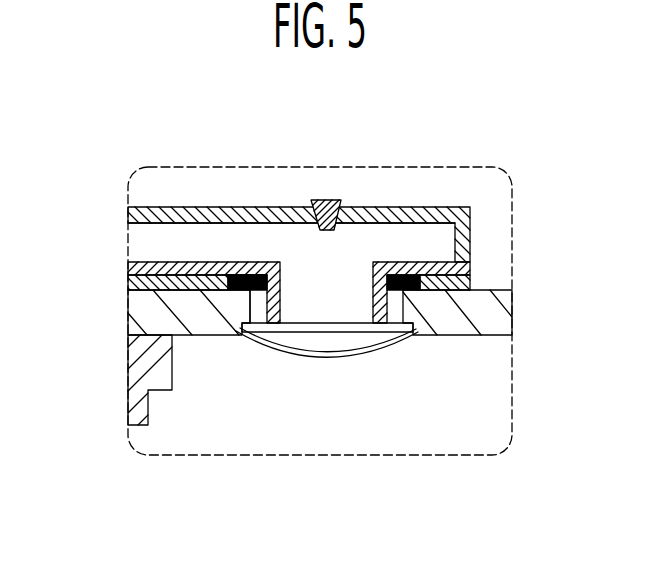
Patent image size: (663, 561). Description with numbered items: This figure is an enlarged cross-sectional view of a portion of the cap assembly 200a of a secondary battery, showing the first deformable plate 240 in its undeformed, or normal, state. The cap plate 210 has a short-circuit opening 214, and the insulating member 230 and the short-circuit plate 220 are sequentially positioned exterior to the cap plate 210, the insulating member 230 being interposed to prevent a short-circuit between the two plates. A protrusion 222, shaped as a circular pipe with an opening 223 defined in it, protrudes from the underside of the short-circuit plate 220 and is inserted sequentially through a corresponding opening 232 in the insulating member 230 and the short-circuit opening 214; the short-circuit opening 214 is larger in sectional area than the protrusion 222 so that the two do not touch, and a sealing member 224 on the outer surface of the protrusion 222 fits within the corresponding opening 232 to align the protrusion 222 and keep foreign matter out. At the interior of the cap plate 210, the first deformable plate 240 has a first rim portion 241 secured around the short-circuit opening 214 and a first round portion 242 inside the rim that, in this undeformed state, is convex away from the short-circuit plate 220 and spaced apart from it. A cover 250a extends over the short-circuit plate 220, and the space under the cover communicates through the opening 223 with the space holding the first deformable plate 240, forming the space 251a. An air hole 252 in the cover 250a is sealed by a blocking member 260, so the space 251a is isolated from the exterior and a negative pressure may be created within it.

The cap assembly 200a is at (474, 170).
The cover 250a is at (299, 177).
The space 251a is at (262, 239).
The air hole 252 is at (291, 207).
The blocking member 260 is at (328, 200).
The short-circuit plate 220 is at (251, 279).
The protrusion 222 is at (380, 276).
The opening 223 is at (279, 292).
The sealing member 224 is at (247, 273).
The insulating member 230 is at (251, 359).
The corresponding opening 232 is at (190, 290).
The cap plate 210 is at (273, 360).
The short-circuit opening 214 is at (252, 305).
The first deformable plate 240 is at (345, 435).
The first rim portion 241 is at (417, 334).
The first round portion 242 is at (348, 358).